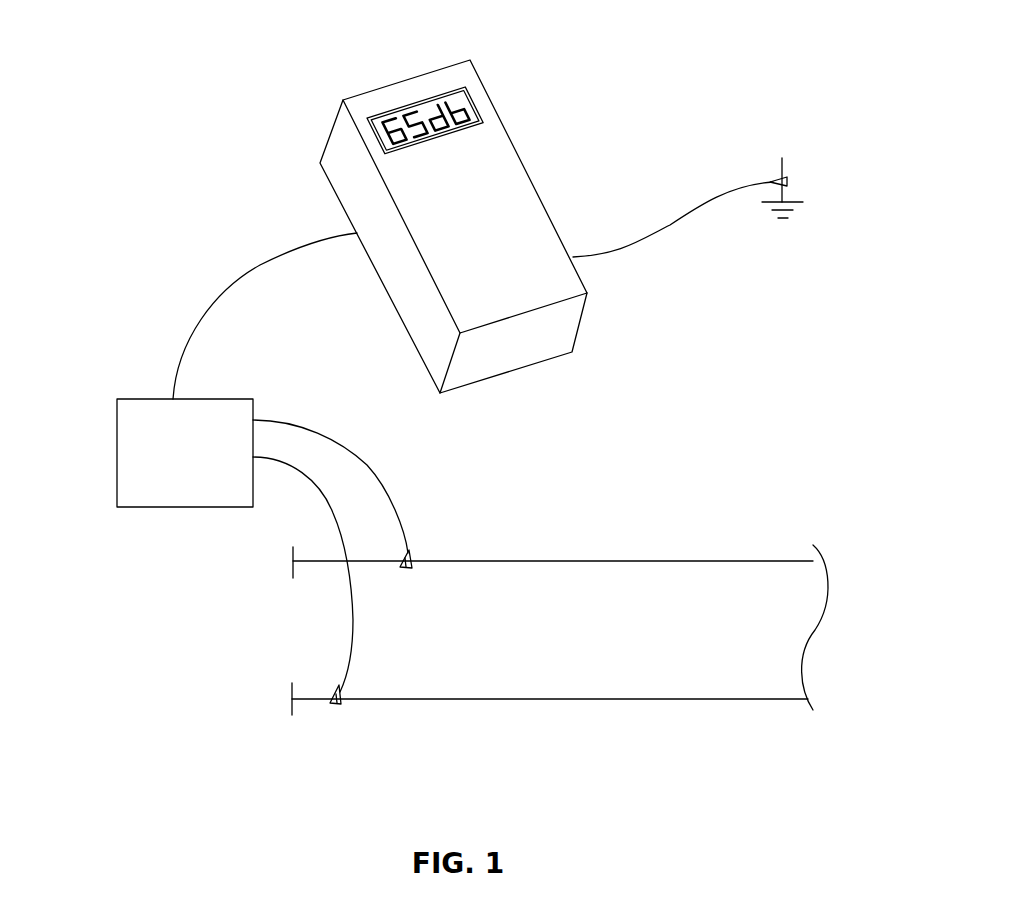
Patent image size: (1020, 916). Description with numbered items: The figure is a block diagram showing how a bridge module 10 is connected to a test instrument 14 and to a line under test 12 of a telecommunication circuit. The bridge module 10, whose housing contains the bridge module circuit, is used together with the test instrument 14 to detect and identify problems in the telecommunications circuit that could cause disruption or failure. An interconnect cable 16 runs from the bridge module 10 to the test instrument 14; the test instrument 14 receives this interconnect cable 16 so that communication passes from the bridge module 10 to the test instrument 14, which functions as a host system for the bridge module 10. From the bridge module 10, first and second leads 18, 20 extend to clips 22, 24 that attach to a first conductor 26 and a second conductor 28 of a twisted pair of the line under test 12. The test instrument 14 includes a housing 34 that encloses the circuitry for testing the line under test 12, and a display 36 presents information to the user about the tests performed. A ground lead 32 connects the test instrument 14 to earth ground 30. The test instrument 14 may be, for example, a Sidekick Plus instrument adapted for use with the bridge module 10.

The bridge module 10 is at (130, 450).
The line under test 12 is at (667, 563).
The test instrument 14 is at (532, 105).
The interconnect cable 16 is at (220, 292).
The first lead 18 is at (367, 463).
The second lead 20 is at (323, 498).
The clip 22 is at (413, 550).
The clip 24 is at (345, 702).
The first conductor 26 is at (612, 562).
The second conductor 28 is at (523, 700).
The earth ground 30 is at (783, 170).
The ground lead 32 is at (670, 225).
The housing 34 is at (483, 193).
The display 36 is at (465, 107).